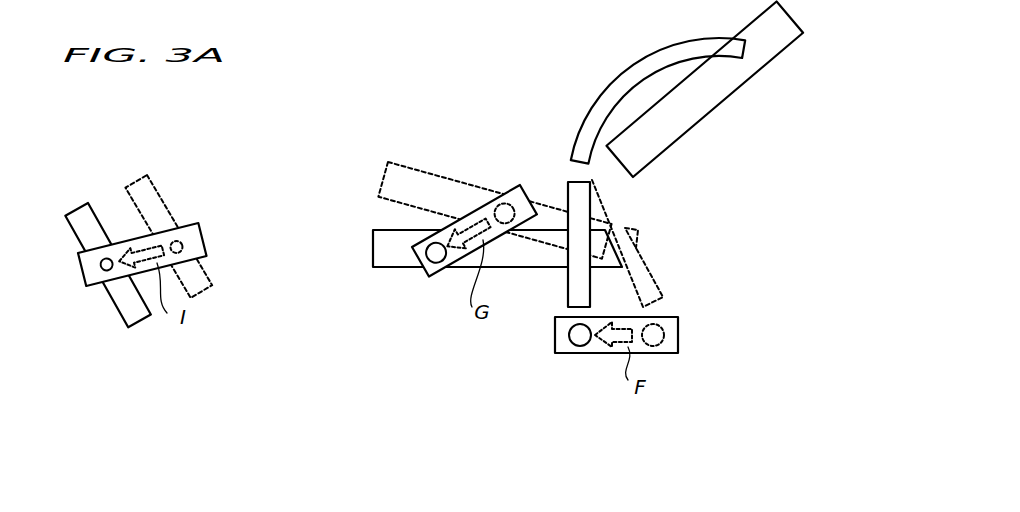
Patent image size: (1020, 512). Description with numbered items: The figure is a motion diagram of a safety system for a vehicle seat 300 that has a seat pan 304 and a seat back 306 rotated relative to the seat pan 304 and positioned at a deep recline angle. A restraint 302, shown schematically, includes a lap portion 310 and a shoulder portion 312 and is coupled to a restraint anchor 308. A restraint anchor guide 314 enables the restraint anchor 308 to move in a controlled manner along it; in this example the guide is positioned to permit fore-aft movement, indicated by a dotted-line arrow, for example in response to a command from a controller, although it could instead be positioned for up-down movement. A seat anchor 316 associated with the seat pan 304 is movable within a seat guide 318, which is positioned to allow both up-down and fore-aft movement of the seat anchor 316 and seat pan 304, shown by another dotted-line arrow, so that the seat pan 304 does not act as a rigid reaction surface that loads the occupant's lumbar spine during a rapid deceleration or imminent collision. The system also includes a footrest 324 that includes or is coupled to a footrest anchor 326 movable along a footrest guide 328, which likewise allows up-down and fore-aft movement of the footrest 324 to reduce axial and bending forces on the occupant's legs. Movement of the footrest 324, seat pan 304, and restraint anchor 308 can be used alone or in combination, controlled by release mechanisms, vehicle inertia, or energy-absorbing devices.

The seat 300 is at (418, 120).
The restraint 302 is at (577, 93).
The seat pan 304 is at (375, 247).
The seat back 306 is at (823, 45).
The restraint anchor 308 is at (555, 335).
The lap portion 310 is at (568, 287).
The shoulder portion 312 is at (683, 40).
The restraint anchor guide 314 is at (682, 333).
The seat anchor 316 is at (443, 265).
The seat guide 318 is at (513, 190).
The footrest 324 is at (82, 208).
The footrest anchor 326 is at (100, 267).
The footrest guide 328 is at (195, 222).